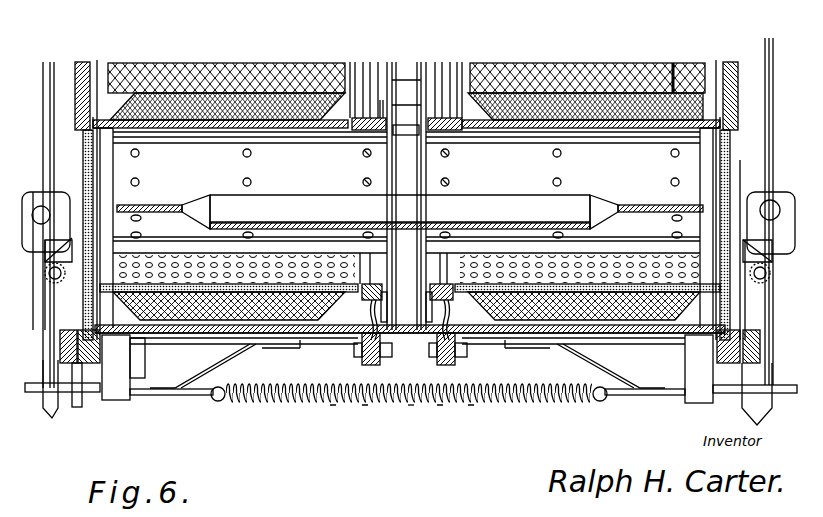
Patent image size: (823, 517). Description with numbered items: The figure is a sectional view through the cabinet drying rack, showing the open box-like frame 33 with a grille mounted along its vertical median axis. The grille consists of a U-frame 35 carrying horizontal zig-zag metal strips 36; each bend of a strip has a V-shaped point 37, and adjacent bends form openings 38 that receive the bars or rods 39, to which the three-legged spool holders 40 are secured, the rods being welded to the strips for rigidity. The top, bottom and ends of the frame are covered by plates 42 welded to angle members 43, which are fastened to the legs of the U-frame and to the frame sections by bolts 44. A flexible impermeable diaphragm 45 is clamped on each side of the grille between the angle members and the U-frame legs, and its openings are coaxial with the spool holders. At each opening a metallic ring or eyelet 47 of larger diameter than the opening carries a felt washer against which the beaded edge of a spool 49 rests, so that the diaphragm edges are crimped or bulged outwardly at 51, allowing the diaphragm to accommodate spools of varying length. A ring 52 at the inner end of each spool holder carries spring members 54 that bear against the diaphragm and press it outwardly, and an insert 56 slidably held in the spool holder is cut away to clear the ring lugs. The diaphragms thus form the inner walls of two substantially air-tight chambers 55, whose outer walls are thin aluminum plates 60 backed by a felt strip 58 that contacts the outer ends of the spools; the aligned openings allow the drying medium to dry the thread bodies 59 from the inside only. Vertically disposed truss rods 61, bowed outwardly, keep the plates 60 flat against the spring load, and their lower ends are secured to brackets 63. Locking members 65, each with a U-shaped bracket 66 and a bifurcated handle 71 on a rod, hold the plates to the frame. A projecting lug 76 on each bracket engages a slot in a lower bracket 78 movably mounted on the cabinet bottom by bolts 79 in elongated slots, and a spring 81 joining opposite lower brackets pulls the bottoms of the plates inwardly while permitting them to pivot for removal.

The box-like frame 33 is at (108, 400).
The U-frame 35 is at (411, 405).
The metal strips 36 is at (408, 110).
The V-shaped bend 37 is at (449, 183).
The openings 38 is at (363, 183).
The bars or rods 39 is at (402, 88).
The spool holders 40 is at (410, 194).
The plates 42 is at (215, 340).
The angle members 43 is at (333, 405).
The bolts 44 is at (365, 405).
The flexible diaphragm 45 is at (365, 70).
The metallic ring or eyelet 47 is at (380, 127).
The spool 49 is at (157, 120).
The crimped edges 51 is at (427, 112).
The ring 52 is at (384, 302).
The spring members 54 is at (393, 130).
The air-tight chambers 55 is at (233, 50).
The insert 56 is at (210, 135).
The backing strip of felt 58 is at (96, 64).
The thread bodies 59 is at (277, 68).
The plates 60 is at (80, 64).
The truss rods 61 is at (43, 110).
The brackets 63 is at (765, 240).
The locking members 65 is at (67, 203).
The U-shaped bracket 66 is at (40, 185).
The bifurcated handle 71 is at (740, 356).
The projecting lug 76 is at (55, 410).
The bracket 78 is at (185, 396).
The bolts 79 is at (312, 350).
The spring 81 is at (409, 411).